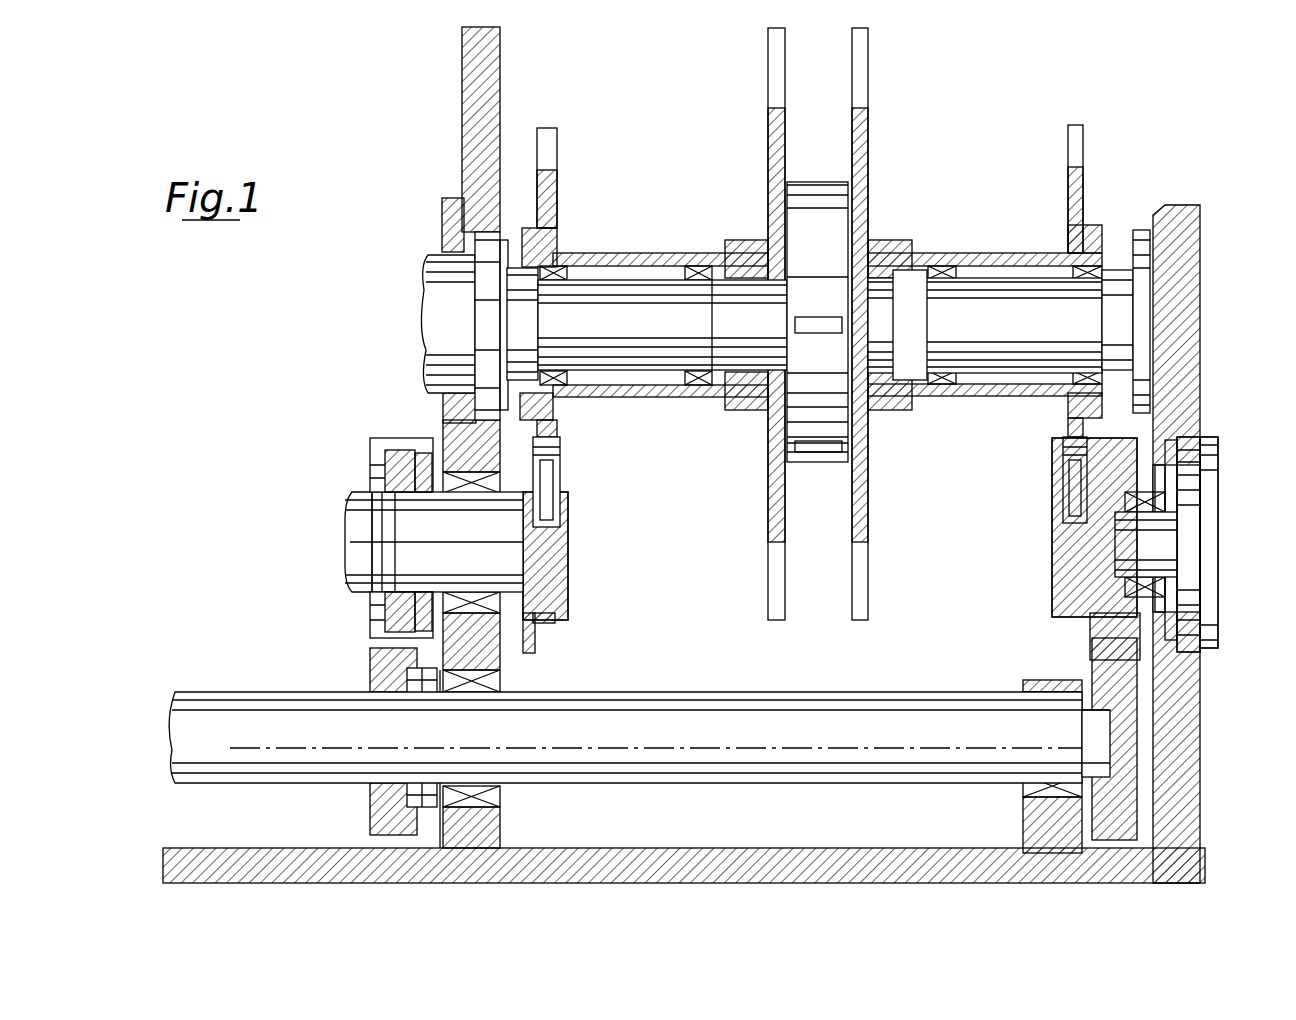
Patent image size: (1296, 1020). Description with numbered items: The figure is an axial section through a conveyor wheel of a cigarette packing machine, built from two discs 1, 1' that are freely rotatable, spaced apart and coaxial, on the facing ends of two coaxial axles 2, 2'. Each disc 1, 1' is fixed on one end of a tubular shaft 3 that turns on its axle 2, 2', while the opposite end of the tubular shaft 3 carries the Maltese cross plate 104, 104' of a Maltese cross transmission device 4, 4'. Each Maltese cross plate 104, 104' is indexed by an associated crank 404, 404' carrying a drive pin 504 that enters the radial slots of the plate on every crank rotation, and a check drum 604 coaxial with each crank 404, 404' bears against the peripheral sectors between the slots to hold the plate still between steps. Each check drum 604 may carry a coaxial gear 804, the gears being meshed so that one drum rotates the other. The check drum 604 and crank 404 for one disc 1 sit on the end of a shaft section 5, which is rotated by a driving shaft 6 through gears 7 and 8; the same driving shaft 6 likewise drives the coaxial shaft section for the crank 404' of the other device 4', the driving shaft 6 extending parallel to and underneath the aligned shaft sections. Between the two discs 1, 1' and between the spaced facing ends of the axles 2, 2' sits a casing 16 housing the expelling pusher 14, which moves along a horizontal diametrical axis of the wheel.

The disc 1 is at (755, 324).
The disc 1' is at (885, 324).
The axle 2 is at (647, 291).
The axle 2' is at (1009, 289).
The tubular shaft 3 is at (690, 258).
The Maltese cross transmission device 4 is at (580, 556).
The Maltese cross transmission device 4' is at (1061, 527).
The shaft section 5 is at (395, 546).
The driving shaft 6 is at (600, 766).
The gear 7 is at (392, 626).
The gear 8 is at (372, 812).
The expelling pusher 14 is at (815, 316).
The casing 16 is at (812, 456).
The Maltese cross plate 104 is at (582, 284).
The Maltese cross plate 104' is at (1120, 281).
The crank 404 is at (586, 552).
The crank 404' is at (1056, 527).
The drive pin 504 is at (562, 473).
The check drum 604 is at (537, 630).
The gear 804 is at (420, 450).